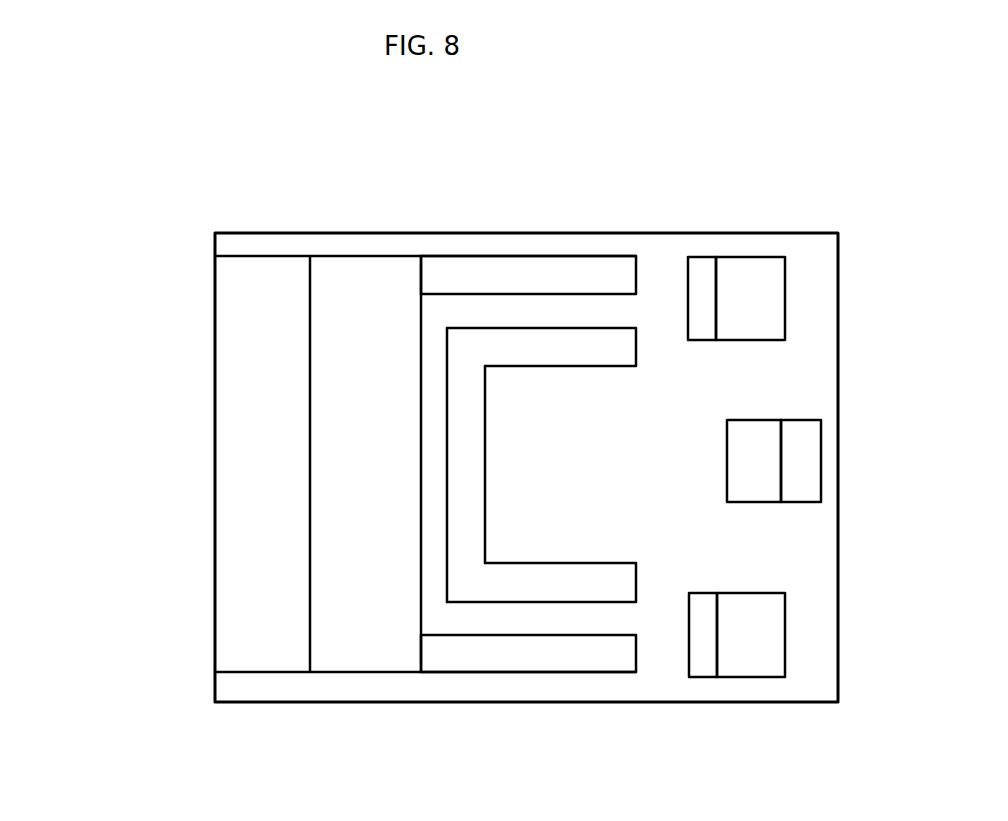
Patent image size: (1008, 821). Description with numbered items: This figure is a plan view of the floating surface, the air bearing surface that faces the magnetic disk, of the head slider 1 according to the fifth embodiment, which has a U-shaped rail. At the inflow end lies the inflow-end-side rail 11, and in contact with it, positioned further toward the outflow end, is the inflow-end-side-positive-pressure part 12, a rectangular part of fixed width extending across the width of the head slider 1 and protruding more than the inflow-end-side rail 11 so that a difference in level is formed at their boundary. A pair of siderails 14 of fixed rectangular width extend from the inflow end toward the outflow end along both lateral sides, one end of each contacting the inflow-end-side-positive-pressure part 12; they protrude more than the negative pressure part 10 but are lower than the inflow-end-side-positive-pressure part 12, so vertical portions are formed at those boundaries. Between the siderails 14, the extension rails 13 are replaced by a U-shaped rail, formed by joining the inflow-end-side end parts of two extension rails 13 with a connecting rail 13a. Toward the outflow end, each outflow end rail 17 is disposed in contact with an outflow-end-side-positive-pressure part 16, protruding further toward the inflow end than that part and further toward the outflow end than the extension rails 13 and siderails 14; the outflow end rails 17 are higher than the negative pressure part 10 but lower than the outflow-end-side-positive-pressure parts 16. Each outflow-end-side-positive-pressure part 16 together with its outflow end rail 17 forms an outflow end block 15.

The head slider 1 is at (526, 449).
The negative pressure part 10 is at (668, 523).
The inflow-end-side rail 11 is at (233, 468).
The inflow-end-side-positive-pressure part 12 is at (338, 273).
The extension rails 13 is at (505, 352).
The connecting rail 13a is at (465, 470).
The siderails 14 is at (518, 276).
The outflow end block 15 is at (802, 458).
The outflow-end-side-positive-pressure part 16 is at (755, 300).
The outflow end rails 17 is at (698, 260).